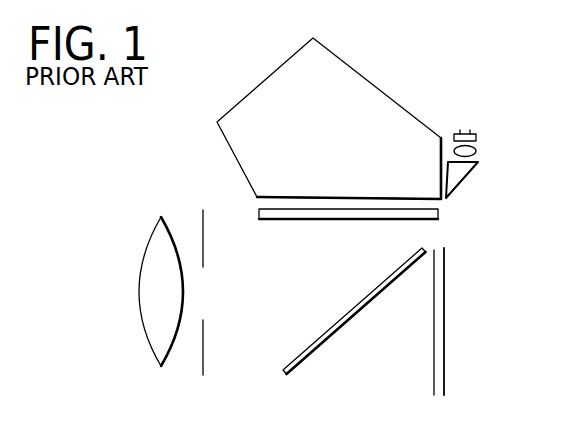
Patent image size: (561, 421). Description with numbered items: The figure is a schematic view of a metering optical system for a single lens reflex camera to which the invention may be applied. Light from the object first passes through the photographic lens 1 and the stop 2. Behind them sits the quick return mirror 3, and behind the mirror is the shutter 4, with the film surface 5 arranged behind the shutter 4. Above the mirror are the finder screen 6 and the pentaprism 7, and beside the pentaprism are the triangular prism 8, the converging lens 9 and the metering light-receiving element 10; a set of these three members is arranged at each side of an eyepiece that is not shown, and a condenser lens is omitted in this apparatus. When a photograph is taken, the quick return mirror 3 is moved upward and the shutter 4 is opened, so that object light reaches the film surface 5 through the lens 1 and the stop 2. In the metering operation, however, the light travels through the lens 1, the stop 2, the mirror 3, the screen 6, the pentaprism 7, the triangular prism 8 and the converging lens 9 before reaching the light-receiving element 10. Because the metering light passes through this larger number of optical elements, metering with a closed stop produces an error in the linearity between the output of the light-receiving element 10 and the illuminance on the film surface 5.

The photographic lens 1 is at (148, 338).
The stop 2 is at (203, 342).
The quick return mirror 3 is at (313, 353).
The shutter 4 is at (434, 350).
The film surface 5 is at (445, 262).
The finder screen 6 is at (286, 212).
The pentaprism 7 is at (382, 99).
The triangular prism 8 is at (467, 178).
The converging lens 9 is at (476, 152).
The metering light-receiving element 10 is at (477, 137).